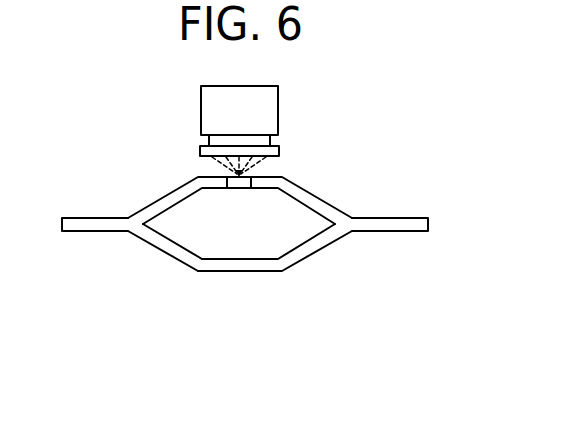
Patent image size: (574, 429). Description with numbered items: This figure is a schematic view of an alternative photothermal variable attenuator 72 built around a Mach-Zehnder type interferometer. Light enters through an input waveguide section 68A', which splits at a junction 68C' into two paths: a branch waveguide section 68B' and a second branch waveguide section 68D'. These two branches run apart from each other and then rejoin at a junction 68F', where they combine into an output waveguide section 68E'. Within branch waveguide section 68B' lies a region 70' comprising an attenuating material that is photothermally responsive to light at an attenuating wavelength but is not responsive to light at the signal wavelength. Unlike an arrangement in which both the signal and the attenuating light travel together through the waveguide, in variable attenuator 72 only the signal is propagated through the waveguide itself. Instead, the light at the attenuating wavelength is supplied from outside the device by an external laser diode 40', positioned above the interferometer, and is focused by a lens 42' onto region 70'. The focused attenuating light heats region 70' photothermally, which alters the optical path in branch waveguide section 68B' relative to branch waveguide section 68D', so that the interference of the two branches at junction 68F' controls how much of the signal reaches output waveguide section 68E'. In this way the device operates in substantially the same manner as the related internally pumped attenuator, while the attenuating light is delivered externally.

The external laser diode 40' is at (204, 111).
The lens 42' is at (273, 146).
The input waveguide section 68A' is at (87, 260).
The branch waveguide section 68B' is at (156, 184).
The junction 68C' is at (161, 262).
The branch waveguide section 68D' is at (275, 280).
The output waveguide section 68E' is at (392, 261).
The junction 68F' is at (315, 183).
The region 70' is at (229, 214).
The variable attenuator 72 is at (239, 276).